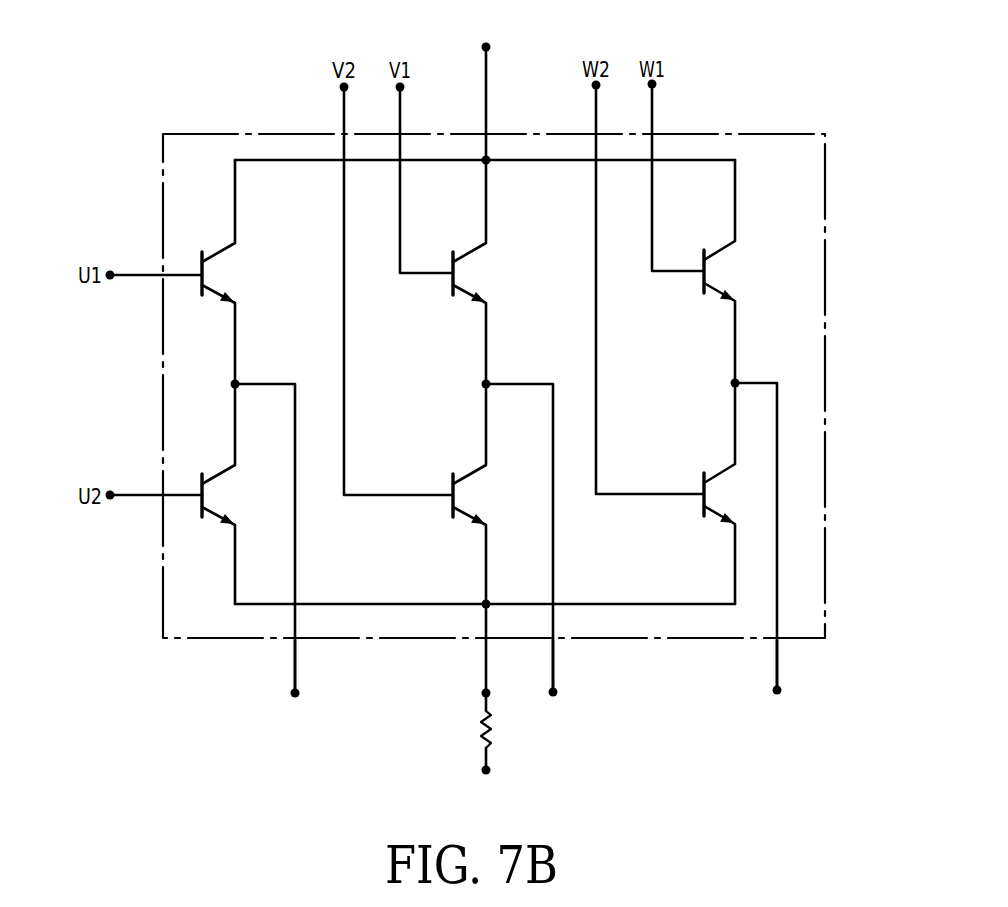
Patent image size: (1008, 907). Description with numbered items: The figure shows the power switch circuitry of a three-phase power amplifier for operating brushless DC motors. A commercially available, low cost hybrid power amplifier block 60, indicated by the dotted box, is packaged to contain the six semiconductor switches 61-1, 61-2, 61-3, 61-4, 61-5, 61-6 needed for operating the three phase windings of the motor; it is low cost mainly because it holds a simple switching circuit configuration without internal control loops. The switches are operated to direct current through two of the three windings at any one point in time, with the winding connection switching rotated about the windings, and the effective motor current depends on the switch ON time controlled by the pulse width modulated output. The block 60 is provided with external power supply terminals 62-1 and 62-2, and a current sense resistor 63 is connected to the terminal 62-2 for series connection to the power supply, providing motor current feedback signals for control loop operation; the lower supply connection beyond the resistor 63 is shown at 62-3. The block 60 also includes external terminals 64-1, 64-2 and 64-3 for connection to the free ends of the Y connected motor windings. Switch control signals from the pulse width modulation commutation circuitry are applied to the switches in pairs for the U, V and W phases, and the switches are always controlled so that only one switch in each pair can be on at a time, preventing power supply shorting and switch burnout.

The hybrid power amplifier block 60 is at (212, 133).
The semiconductor switch 61-1 is at (215, 248).
The semiconductor switch 61-2 is at (222, 470).
The semiconductor switch 61-3 is at (463, 245).
The semiconductor switch 61-4 is at (462, 468).
The semiconductor switch 61-5 is at (714, 245).
The semiconductor switch 61-6 is at (714, 466).
The external power supply terminal 62-1 is at (488, 49).
The external power supply terminal 62-2 is at (484, 693).
The negative power supply terminal 62-3 is at (484, 770).
The current sense resistor 63 is at (484, 728).
The external terminal 64-1 is at (293, 692).
The external terminal 64-2 is at (555, 691).
The external terminal 64-3 is at (775, 690).